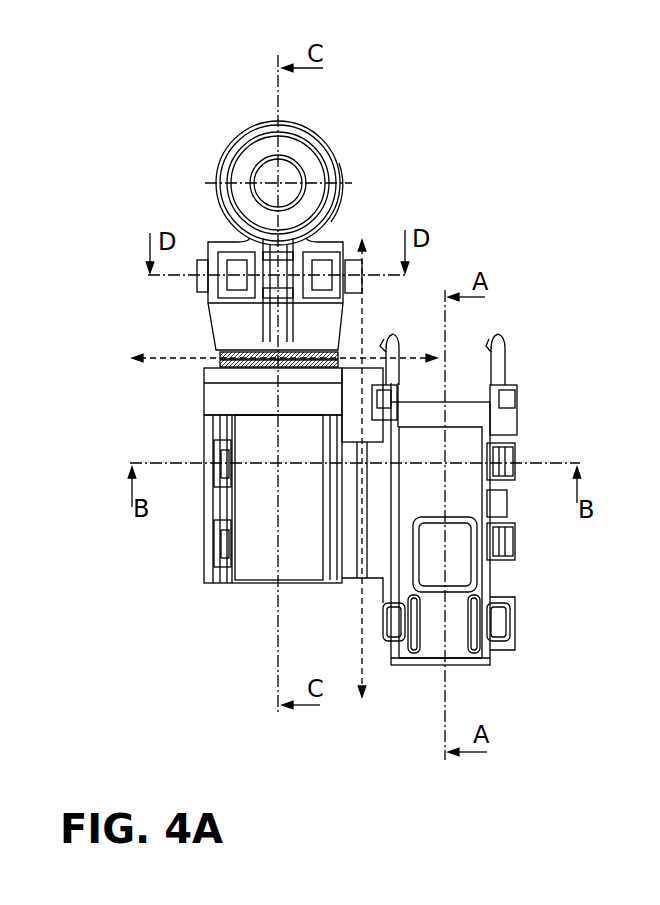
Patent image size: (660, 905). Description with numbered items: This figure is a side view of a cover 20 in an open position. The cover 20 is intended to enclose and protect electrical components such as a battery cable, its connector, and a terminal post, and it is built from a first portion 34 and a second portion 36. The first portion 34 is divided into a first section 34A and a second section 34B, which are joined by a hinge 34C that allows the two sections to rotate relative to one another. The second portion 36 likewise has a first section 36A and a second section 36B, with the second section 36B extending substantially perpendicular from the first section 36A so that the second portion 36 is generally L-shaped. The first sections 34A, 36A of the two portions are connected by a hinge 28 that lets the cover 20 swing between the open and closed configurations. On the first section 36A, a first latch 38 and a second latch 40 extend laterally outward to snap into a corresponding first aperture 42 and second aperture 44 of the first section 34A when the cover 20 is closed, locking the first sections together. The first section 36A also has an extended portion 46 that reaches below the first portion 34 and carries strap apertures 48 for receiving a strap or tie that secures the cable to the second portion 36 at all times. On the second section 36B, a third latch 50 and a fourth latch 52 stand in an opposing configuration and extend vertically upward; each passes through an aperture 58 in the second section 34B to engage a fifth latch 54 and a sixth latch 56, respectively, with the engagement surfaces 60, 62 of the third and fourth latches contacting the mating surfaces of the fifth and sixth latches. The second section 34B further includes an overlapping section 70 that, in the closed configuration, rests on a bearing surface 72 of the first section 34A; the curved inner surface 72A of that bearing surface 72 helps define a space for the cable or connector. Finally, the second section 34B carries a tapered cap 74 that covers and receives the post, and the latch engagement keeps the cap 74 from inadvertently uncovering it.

The cover 20 is at (107, 100).
The hinge 28 is at (352, 590).
The first portion 34 is at (112, 260).
The first section of the first portion 34A is at (137, 598).
The second section of the first portion 34B is at (170, 210).
The hinge 34C is at (207, 361).
The second portion 36 is at (557, 330).
The first section of the second portion 36A is at (553, 660).
The second section of the second portion 36B is at (533, 377).
The first latch 38 is at (512, 542).
The second latch 40 is at (513, 452).
The first aperture 42 is at (208, 563).
The second aperture 44 is at (227, 455).
The extended portion 46 is at (484, 675).
The apertures 48 is at (500, 618).
The third latch 50 is at (390, 333).
The fourth latch 52 is at (498, 335).
The fifth latch 54 is at (322, 241).
The sixth latch 56 is at (232, 272).
The aperture 58 is at (221, 267).
The engagement surface 60 is at (400, 343).
The engagement surface 62 is at (492, 356).
The overlapping section 70 is at (197, 343).
The bearing surface 72 is at (207, 368).
The inner surface 72A is at (237, 400).
The cap 74 is at (290, 165).